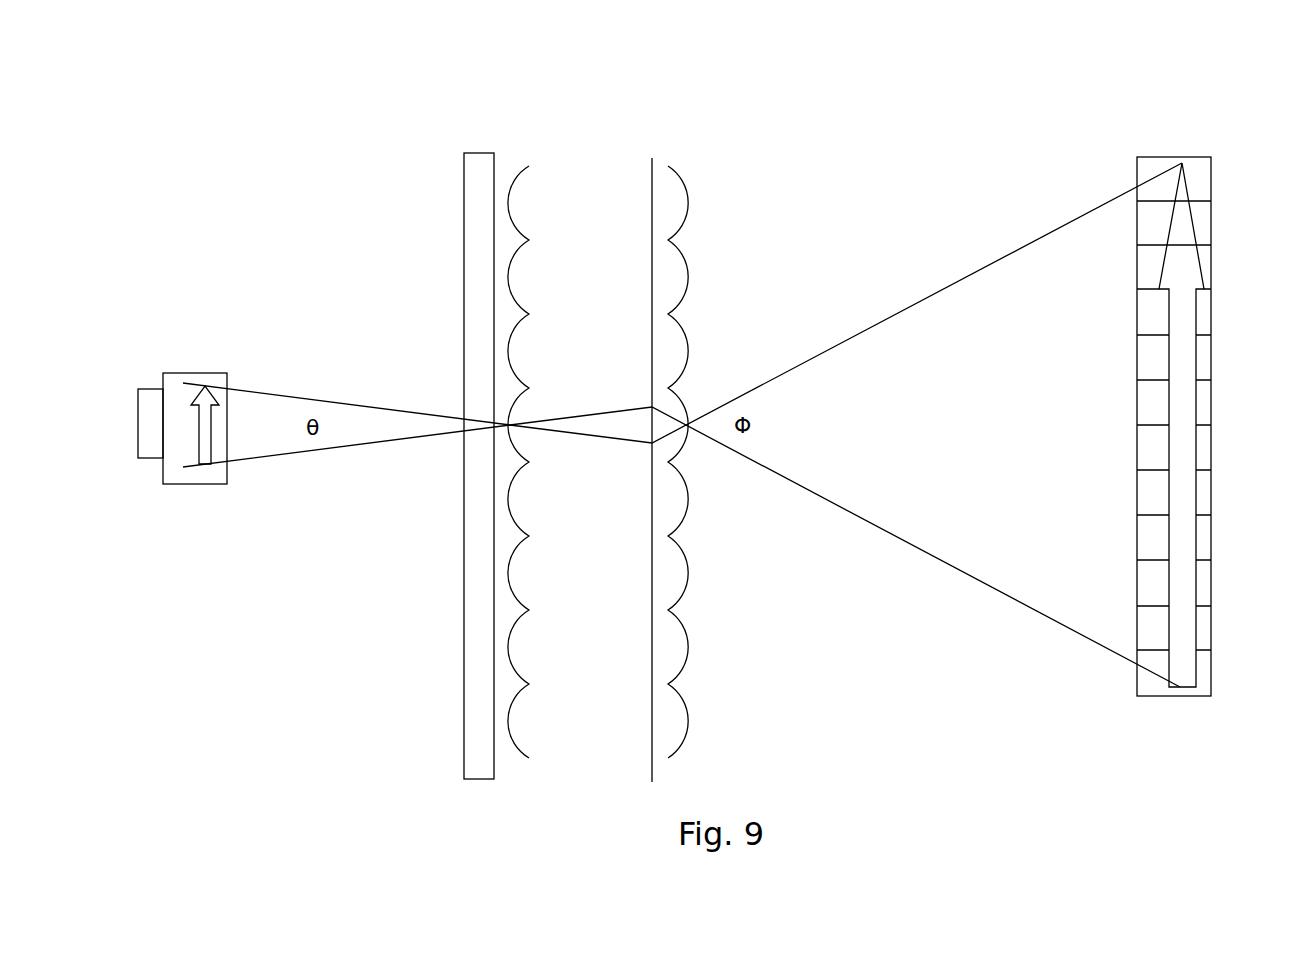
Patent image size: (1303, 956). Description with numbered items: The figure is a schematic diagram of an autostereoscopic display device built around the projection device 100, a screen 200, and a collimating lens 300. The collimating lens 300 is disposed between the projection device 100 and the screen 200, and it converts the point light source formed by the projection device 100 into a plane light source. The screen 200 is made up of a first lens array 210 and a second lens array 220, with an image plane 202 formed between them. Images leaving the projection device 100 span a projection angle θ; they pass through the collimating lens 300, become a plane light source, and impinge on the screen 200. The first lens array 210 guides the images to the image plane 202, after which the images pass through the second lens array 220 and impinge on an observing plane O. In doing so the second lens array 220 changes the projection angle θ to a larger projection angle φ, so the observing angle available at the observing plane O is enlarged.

The projection device 100 is at (180, 372).
The screen 200 is at (725, 102).
The first lens array 210 is at (520, 170).
The image plane 202 is at (640, 176).
The second lens array 220 is at (683, 180).
The collimating lens 300 is at (480, 165).
The observing plane O is at (1177, 140).